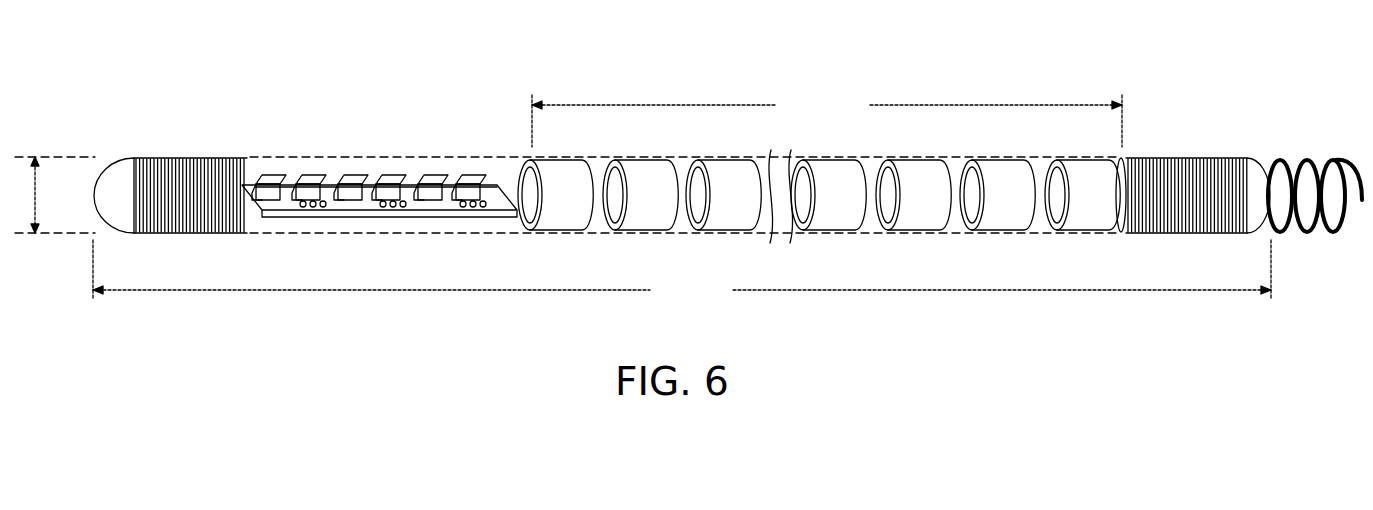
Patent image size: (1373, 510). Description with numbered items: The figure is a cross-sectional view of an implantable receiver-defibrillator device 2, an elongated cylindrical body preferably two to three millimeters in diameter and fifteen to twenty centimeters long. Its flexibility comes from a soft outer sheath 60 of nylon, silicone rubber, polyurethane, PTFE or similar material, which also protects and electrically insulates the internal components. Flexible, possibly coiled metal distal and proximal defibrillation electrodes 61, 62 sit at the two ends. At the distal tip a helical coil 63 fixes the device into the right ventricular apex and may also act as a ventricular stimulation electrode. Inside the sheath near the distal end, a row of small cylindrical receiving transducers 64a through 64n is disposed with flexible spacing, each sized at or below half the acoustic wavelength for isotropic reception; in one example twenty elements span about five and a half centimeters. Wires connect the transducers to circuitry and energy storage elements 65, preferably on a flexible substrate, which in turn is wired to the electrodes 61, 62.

The implantable receiver-defibrillator device 2 is at (194, 94).
The soft outer sheath 60 is at (506, 156).
The distal defibrillation electrode 61 is at (1228, 158).
The proximal defibrillation electrode 62 is at (181, 234).
The helical coil 63 is at (1318, 158).
The receiving transducer 64a is at (1003, 225).
The receiving transducer 64n is at (955, 195).
The circuitry and energy storage elements 65 is at (392, 174).